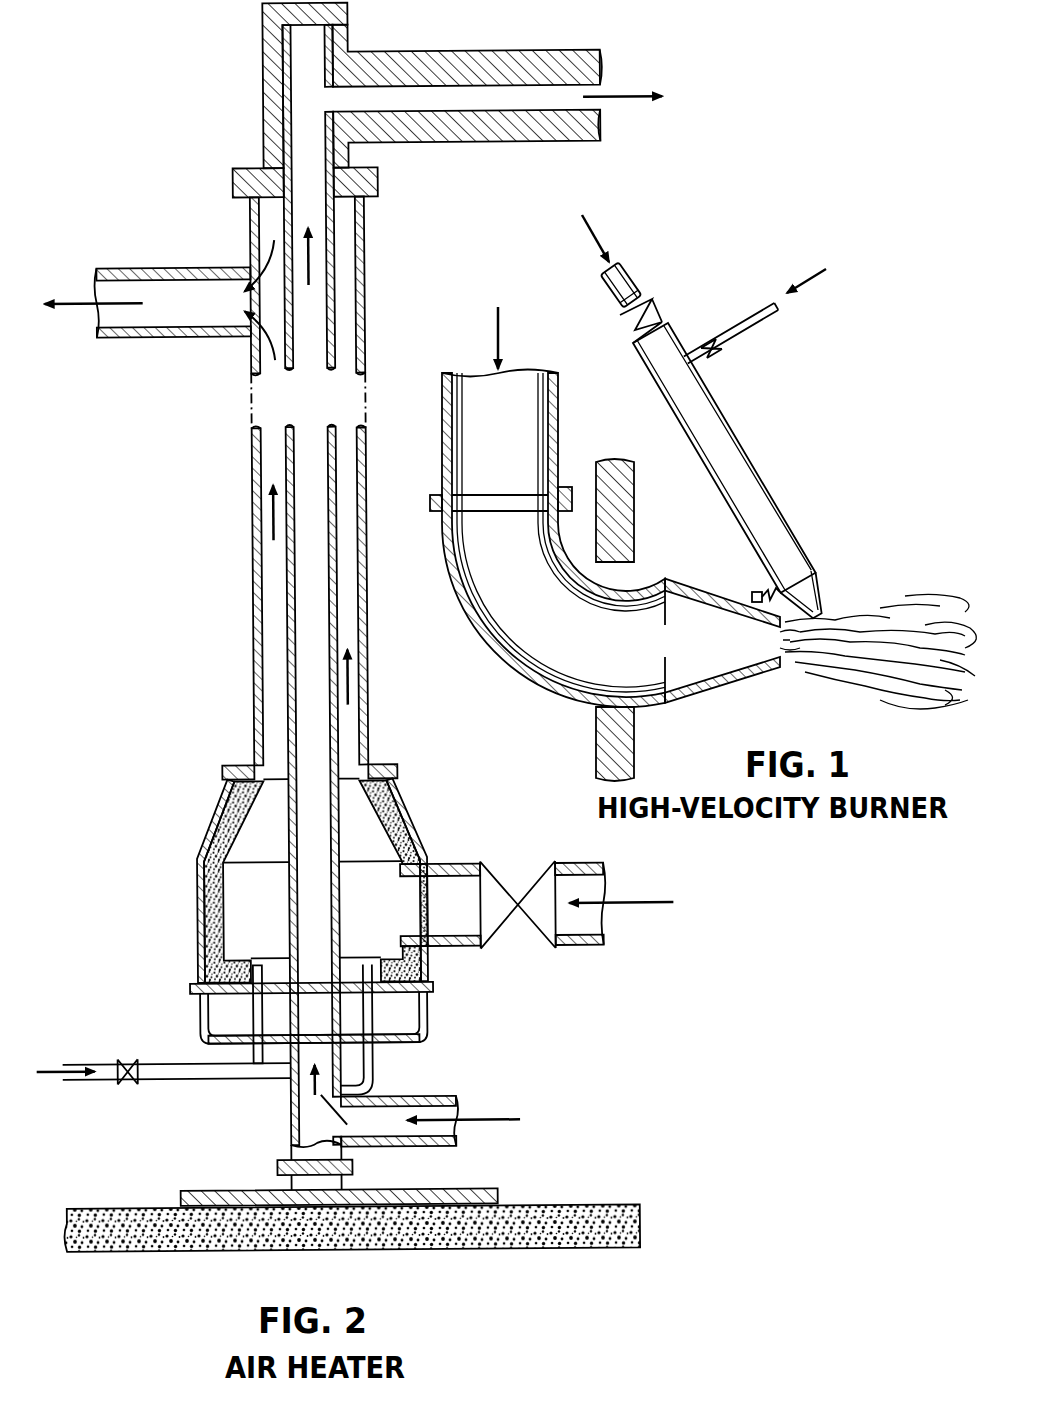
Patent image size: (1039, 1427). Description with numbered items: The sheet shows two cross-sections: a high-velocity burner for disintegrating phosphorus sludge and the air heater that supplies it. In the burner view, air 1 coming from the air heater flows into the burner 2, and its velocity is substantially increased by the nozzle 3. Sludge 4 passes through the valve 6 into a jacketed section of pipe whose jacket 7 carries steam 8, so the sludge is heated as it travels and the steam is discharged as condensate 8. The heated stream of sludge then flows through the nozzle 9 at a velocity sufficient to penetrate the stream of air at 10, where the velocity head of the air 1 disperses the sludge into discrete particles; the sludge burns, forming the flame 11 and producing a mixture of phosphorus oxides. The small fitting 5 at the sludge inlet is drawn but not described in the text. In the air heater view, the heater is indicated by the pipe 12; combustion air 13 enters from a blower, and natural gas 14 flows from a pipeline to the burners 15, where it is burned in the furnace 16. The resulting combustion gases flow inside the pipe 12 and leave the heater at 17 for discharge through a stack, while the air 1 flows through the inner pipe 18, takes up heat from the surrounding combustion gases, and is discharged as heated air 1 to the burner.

In FIG. 2, the air 1 is at (621, 96).
In FIG. 1, the air 1 is at (495, 325).
In FIG. 1, the burner 2 is at (530, 676).
In FIG. 1, the nozzle 3 is at (715, 688).
In FIG. 1, the sludge 4 is at (598, 240).
In FIG. 1, the fuel nozzle 5 is at (640, 283).
In FIG. 1, the valve 6 is at (635, 330).
In FIG. 1, the jacket 7 is at (765, 486).
In FIG. 1, the steam 8 is at (810, 280).
In FIG. 1, the nozzle 9 is at (812, 596).
In FIG. 1, the penetration point 10 is at (802, 650).
In FIG. 1, the flame 11 is at (915, 640).
In FIG. 2, the air heater 12 is at (253, 580).
In FIG. 2, the combustion air 13 is at (649, 905).
In FIG. 2, the natural gas 14 is at (60, 1074).
In FIG. 2, the burners 15 is at (253, 1010).
In FIG. 2, the furnace 16 is at (221, 818).
In FIG. 2, the combustion gas outlet 17 is at (82, 300).
In FIG. 2, the pipe 18 is at (287, 470).